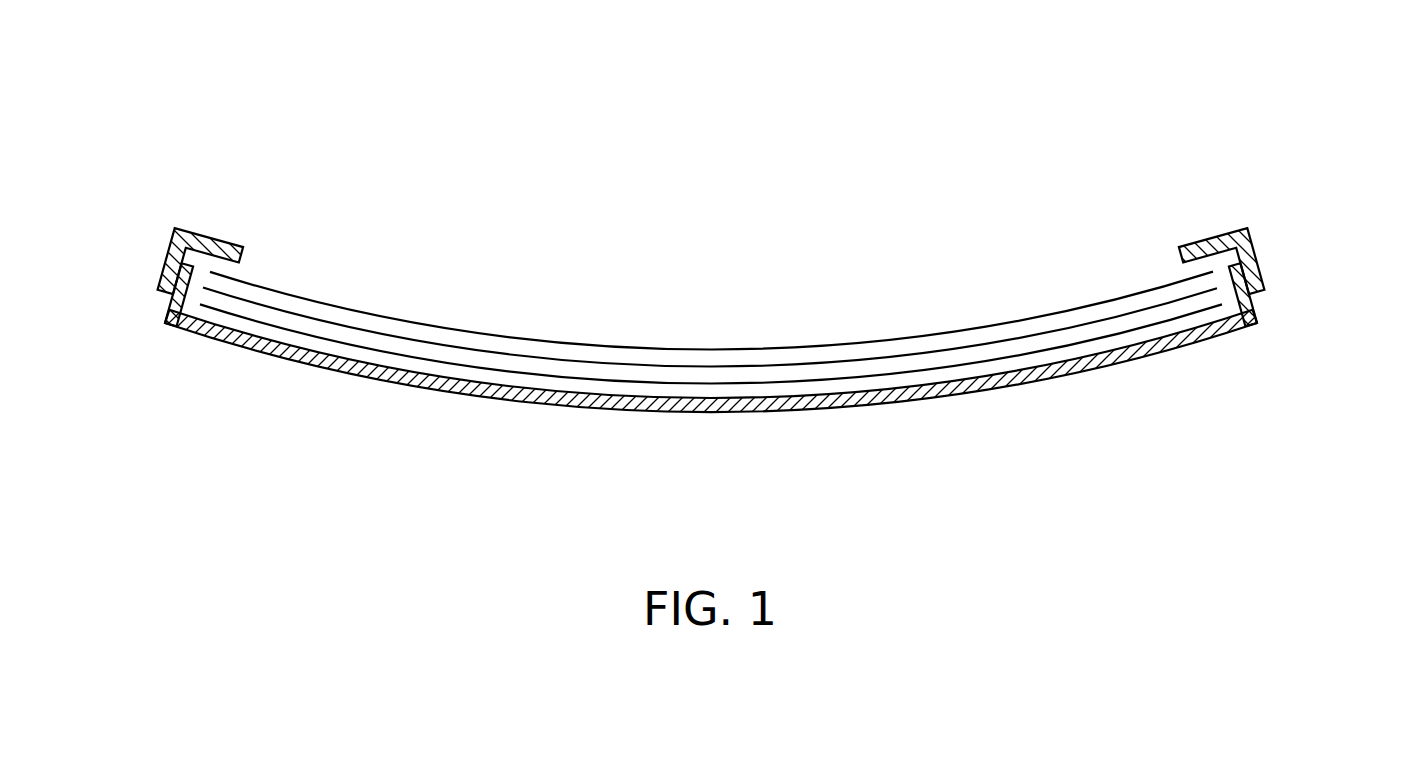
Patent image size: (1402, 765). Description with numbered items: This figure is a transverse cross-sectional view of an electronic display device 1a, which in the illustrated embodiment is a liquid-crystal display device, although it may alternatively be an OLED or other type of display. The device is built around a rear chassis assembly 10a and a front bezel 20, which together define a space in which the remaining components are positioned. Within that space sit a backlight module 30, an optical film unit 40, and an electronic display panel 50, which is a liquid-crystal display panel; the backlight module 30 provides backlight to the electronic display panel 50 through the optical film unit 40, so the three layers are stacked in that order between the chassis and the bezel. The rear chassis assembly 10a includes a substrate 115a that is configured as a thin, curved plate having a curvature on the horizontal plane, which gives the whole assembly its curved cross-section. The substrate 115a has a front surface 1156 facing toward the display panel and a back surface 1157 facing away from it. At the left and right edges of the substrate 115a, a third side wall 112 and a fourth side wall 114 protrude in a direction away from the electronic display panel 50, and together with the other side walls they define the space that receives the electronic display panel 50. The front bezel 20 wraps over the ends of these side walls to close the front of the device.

The electronic display device 1a is at (208, 107).
The rear chassis assembly 10a is at (711, 389).
The third side wall 112 is at (160, 308).
The fourth side wall 114 is at (1258, 308).
The front bezel 20 is at (1203, 240).
The backlight module 30 is at (343, 343).
The optical film unit 40 is at (400, 333).
The electronic display panel 50 is at (463, 328).
The front surface 1156 is at (760, 397).
The back surface 1157 is at (828, 411).
The substrate 115a is at (993, 387).